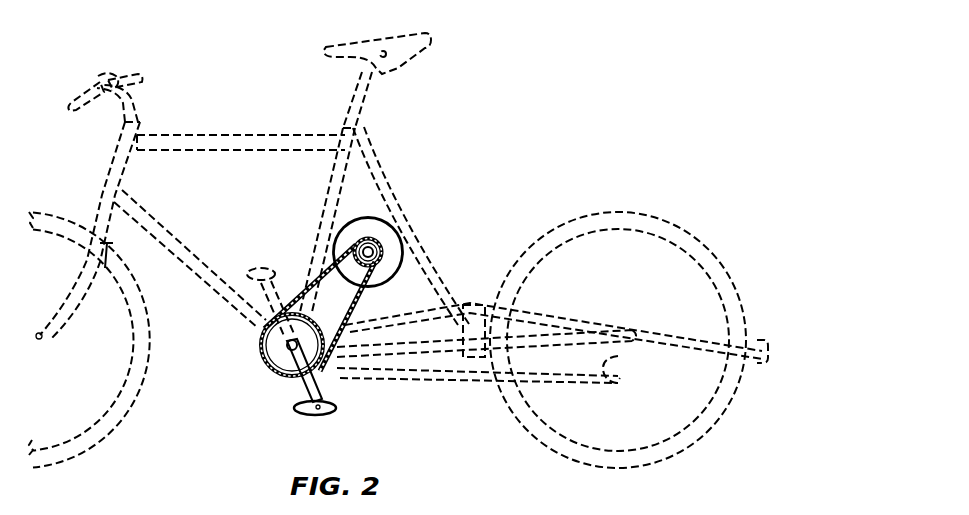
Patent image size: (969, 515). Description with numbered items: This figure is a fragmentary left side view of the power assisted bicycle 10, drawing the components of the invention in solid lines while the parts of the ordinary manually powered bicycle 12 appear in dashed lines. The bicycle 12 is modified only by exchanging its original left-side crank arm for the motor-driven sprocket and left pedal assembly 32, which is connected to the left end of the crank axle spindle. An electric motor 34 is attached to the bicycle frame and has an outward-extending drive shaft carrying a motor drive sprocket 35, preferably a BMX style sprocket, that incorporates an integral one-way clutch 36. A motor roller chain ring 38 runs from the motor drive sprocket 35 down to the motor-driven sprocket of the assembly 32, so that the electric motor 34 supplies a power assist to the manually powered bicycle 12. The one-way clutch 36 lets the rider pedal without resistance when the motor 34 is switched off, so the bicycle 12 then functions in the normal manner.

The power assisted bicycle 10 is at (601, 188).
The manually powered bicycle 12 is at (227, 135).
The motor-driven sprocket and left pedal assembly 32 is at (268, 368).
The electric motor 34 is at (388, 229).
The motor drive sprocket 35 is at (367, 250).
The one-way clutch 36 is at (385, 259).
The motor roller chain ring 38 is at (366, 268).